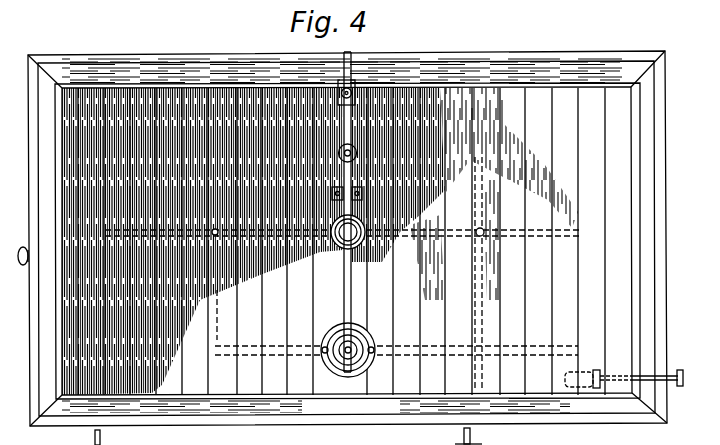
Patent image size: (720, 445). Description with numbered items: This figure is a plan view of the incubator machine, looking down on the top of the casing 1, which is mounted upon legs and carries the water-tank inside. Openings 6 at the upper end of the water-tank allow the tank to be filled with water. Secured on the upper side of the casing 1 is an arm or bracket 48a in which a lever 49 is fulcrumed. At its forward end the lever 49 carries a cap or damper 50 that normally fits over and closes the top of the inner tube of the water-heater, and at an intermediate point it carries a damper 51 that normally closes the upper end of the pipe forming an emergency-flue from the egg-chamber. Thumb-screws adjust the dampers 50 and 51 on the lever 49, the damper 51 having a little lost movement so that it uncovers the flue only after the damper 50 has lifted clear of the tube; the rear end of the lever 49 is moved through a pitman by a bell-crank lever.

The casing 1 is at (342, 248).
The openings 6 is at (341, 241).
The arm or bracket 48a is at (360, 192).
The lever 49 is at (352, 278).
The cap or damper 50 is at (340, 338).
The damper 51 is at (344, 242).